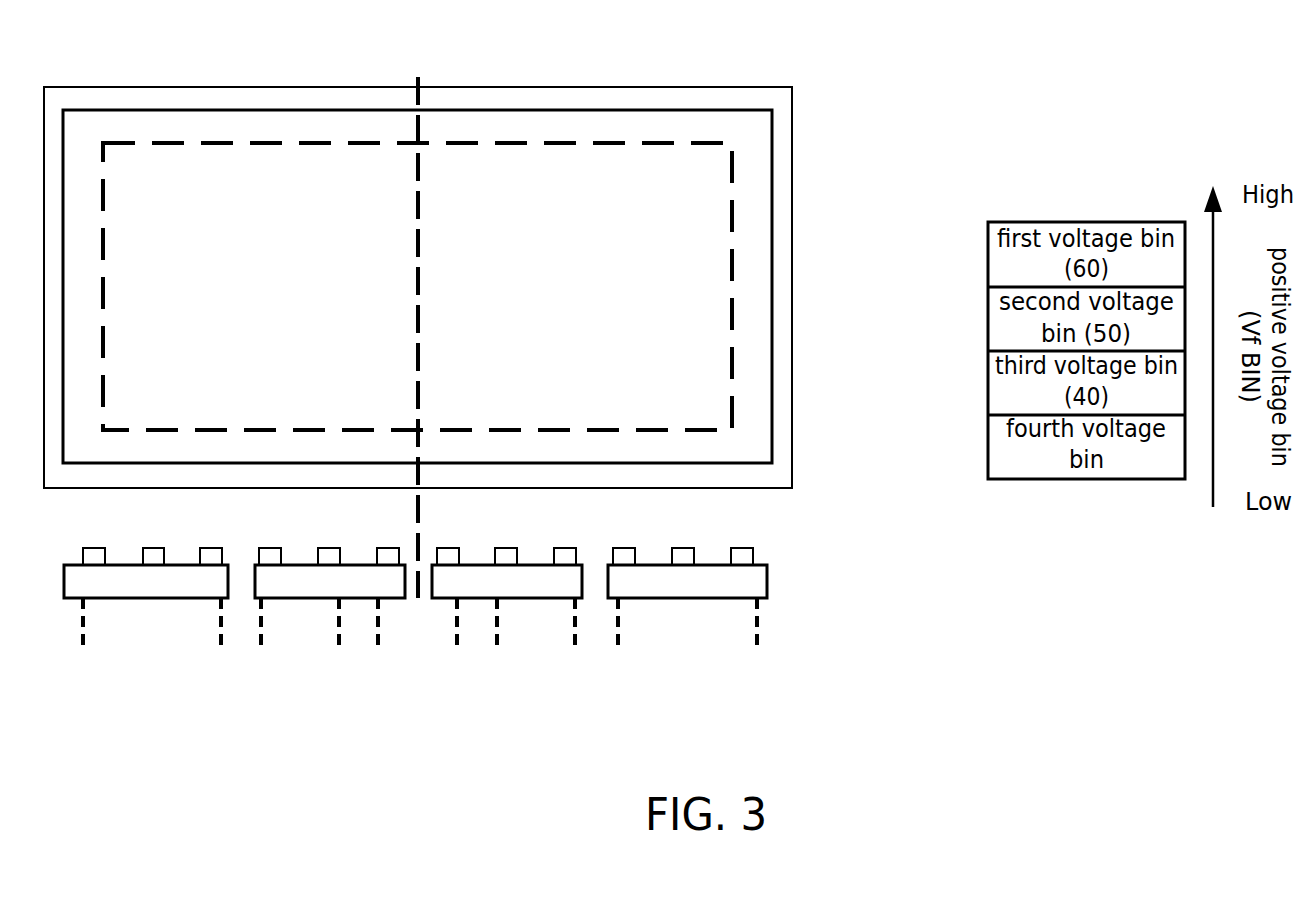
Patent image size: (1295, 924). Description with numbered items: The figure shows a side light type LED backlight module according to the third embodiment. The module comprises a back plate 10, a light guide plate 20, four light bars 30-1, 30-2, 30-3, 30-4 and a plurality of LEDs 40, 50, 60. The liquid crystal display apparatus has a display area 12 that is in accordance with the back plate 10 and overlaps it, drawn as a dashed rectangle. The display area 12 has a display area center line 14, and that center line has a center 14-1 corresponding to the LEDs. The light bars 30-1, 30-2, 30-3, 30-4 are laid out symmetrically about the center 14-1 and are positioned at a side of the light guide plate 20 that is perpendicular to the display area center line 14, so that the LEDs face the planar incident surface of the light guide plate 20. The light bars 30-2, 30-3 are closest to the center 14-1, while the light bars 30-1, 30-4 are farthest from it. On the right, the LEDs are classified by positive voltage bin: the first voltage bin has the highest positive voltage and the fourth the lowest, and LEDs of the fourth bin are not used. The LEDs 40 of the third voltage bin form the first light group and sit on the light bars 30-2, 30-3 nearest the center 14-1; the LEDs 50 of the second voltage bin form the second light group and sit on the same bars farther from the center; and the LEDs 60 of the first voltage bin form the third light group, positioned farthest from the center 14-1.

The back plate 10 is at (792, 353).
The light guide plate 20 is at (772, 284).
The display area 12 is at (732, 173).
The display area center line 14 is at (425, 318).
The center 14-1 is at (424, 551).
The light bar 30-1 is at (146, 573).
The light bar 30-2 is at (330, 573).
The light bar 30-3 is at (507, 573).
The light bar 30-4 is at (687, 573).
The LEDs 40 is at (421, 684).
The LEDs 50 is at (419, 673).
The LEDs 60 is at (420, 673).